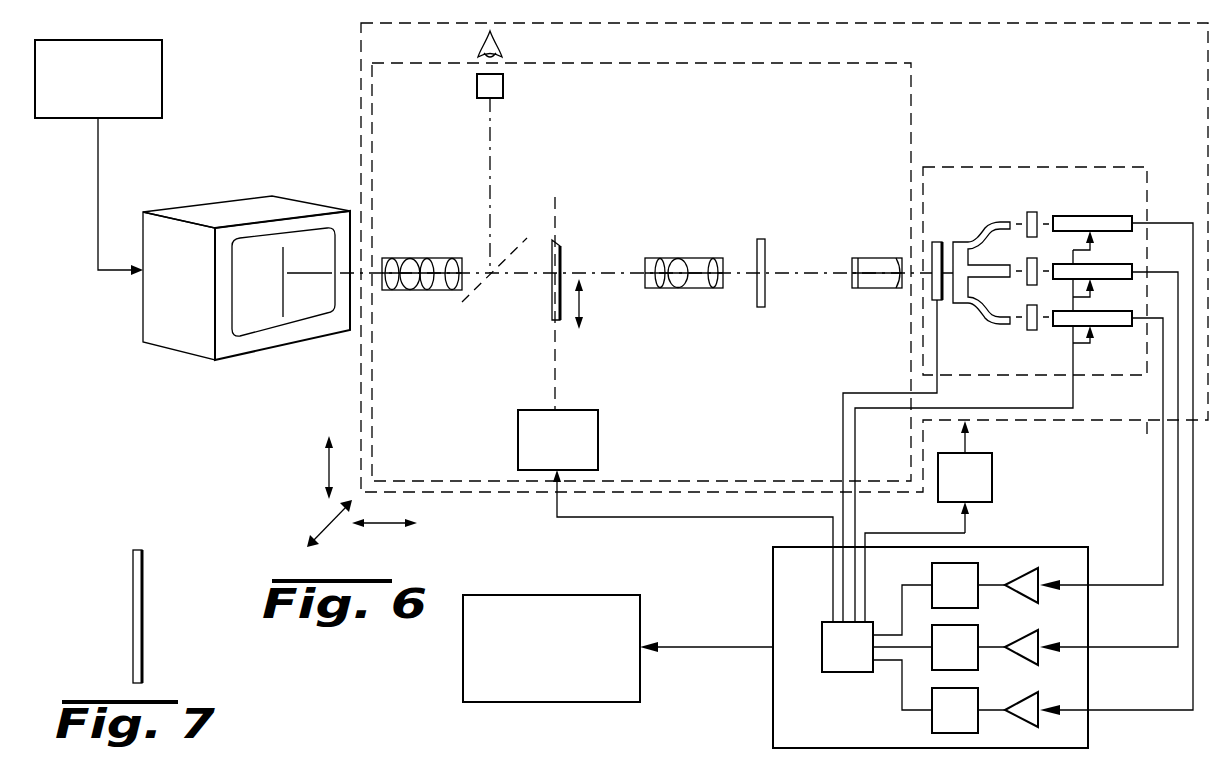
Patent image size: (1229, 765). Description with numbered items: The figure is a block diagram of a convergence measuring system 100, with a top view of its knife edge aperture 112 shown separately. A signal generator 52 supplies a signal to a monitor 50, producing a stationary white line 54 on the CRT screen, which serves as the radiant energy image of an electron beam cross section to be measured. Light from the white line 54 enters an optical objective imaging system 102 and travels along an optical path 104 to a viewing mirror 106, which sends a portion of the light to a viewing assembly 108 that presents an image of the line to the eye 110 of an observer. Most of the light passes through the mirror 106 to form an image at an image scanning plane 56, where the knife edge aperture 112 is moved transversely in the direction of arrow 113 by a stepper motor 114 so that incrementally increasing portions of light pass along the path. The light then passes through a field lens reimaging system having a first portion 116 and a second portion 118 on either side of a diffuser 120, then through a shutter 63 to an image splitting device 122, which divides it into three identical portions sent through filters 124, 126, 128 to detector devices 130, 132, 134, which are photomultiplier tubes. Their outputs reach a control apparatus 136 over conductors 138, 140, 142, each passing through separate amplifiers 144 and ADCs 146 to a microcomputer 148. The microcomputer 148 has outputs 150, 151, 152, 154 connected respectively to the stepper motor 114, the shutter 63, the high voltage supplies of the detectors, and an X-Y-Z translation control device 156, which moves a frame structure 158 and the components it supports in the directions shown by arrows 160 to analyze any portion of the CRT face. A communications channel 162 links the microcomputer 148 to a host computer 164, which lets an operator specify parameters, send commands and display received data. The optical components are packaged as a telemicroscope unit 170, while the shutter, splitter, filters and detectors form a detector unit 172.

In FIG. 6, the monitor 50 is at (280, 205).
In FIG. 6, the signal generator 52 is at (163, 80).
In FIG. 6, the white line 54 is at (287, 263).
In FIG. 6, the image scanning plane 56 is at (556, 213).
In FIG. 6, the shutter 63 is at (943, 242).
In FIG. 6, the convergence measuring system 100 is at (713, 743).
In FIG. 6, the optical objective imaging system 102 is at (420, 258).
In FIG. 6, the optical path 104 is at (462, 258).
In FIG. 6, the viewing mirror 106 is at (462, 301).
In FIG. 6, the viewing assembly 108 is at (503, 87).
In FIG. 6, the eye 110 is at (497, 48).
In FIG. 6, the knife edge aperture 112 is at (562, 257).
In FIG. 7, the knife edge aperture 112 is at (150, 591).
In FIG. 6, the arrow 113 is at (581, 305).
In FIG. 6, the stepper motor 114 is at (600, 440).
In FIG. 6, the first portion of field lens reimaging system 116 is at (688, 258).
In FIG. 6, the second portion of field lens reimaging system 118 is at (873, 288).
In FIG. 6, the diffuser 120 is at (765, 252).
In FIG. 6, the image splitting device 122 is at (997, 219).
In FIG. 6, the filter 124 is at (1037, 212).
In FIG. 6, the filter 126 is at (1027, 280).
In FIG. 6, the filter 128 is at (1033, 334).
In FIG. 6, the detector device 130 is at (1100, 216).
In FIG. 6, the detector device 132 is at (1132, 265).
In FIG. 6, the detector device 134 is at (1120, 327).
In FIG. 6, the control apparatus 136 is at (773, 607).
In FIG. 6, the conductor 138 is at (1100, 583).
In FIG. 6, the conductor 140 is at (1112, 645).
In FIG. 6, the conductor 142 is at (1122, 708).
In FIG. 6, the amplifier 144 is at (1043, 570).
In FIG. 6, the ADC 146 is at (978, 570).
In FIG. 6, the microcomputer 148 is at (842, 673).
In FIG. 6, the output 150 is at (717, 518).
In FIG. 6, the output 151 is at (842, 433).
In FIG. 6, the output 152 is at (856, 442).
In FIG. 6, the output 154 is at (937, 533).
In FIG. 6, the X-Y-Z translation control device 156 is at (992, 483).
In FIG. 6, the frame structure 158 is at (1142, 424).
In FIG. 6, the arrows 160 is at (383, 527).
In FIG. 6, the communications channel 162 is at (713, 649).
In FIG. 6, the host computer 164 is at (463, 667).
In FIG. 6, the telemicroscope unit 170 is at (452, 61).
In FIG. 6, the detector unit 172 is at (1103, 165).